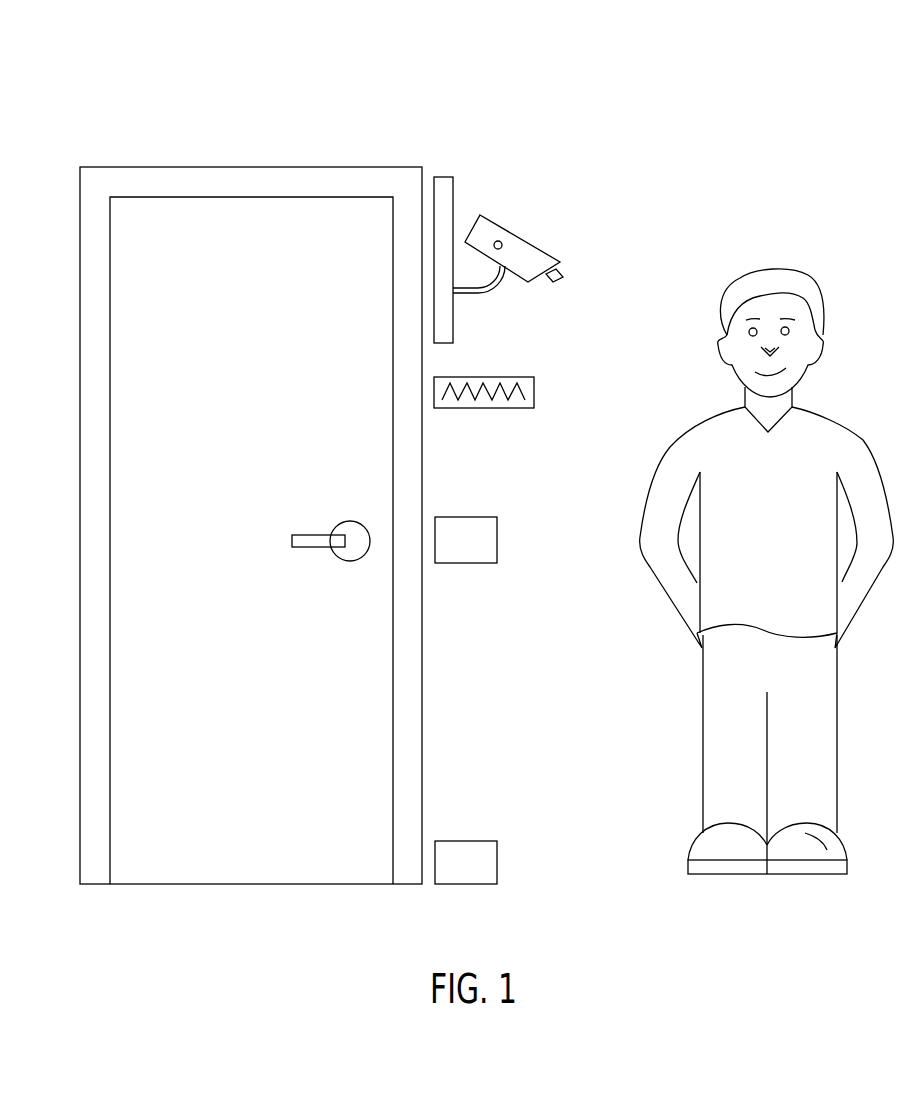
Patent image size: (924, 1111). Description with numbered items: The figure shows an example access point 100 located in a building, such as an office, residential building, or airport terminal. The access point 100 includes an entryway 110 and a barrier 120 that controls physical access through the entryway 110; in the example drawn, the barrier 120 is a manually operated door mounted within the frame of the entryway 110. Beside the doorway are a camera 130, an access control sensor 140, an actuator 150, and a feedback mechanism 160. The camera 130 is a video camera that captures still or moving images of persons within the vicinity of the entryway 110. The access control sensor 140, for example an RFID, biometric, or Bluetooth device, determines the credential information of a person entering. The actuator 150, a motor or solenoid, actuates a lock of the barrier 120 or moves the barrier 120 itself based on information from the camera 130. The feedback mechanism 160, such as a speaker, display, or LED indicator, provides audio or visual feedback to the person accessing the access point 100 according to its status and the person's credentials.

The access point 100 is at (112, 62).
The entryway 110 is at (250, 167).
The barrier 120 is at (110, 540).
The camera 130 is at (522, 240).
The access control sensor 140 is at (497, 540).
The actuator 150 is at (497, 860).
The feedback mechanism 160 is at (534, 392).